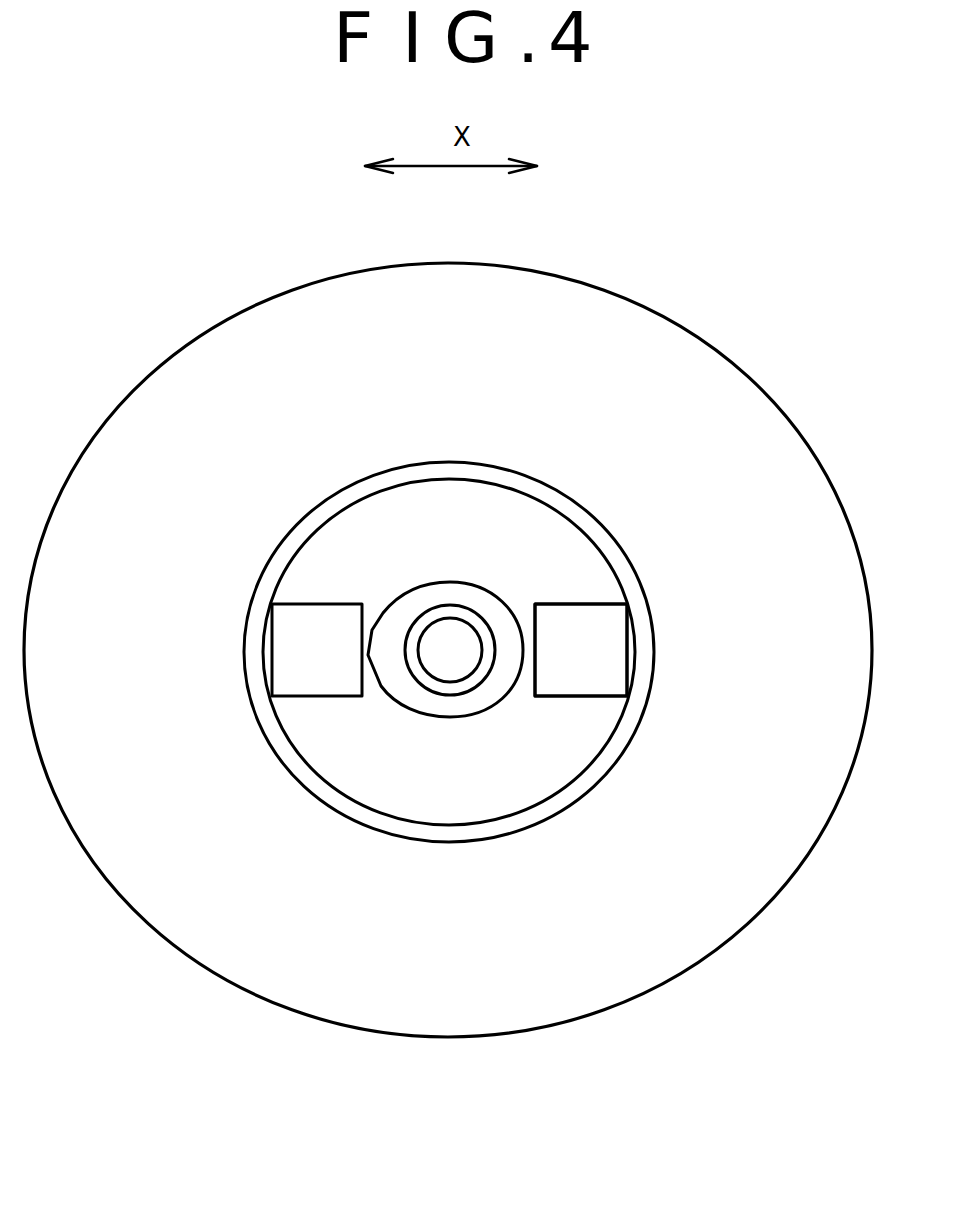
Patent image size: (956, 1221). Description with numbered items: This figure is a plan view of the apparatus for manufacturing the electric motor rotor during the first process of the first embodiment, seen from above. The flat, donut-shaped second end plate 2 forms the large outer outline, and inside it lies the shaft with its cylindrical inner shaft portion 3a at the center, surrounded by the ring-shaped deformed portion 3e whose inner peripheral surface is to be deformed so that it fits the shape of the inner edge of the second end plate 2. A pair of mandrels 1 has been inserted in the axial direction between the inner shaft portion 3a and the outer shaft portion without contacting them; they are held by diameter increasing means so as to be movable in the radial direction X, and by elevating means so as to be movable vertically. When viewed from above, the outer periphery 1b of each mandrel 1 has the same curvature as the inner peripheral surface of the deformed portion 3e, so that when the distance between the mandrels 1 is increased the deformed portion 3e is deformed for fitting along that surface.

The mandrels 1 is at (327, 622).
The outer periphery 1b is at (630, 660).
The second end plate 2 is at (755, 452).
The inner shaft portion 3a is at (463, 683).
The deformed portion 3e is at (595, 772).